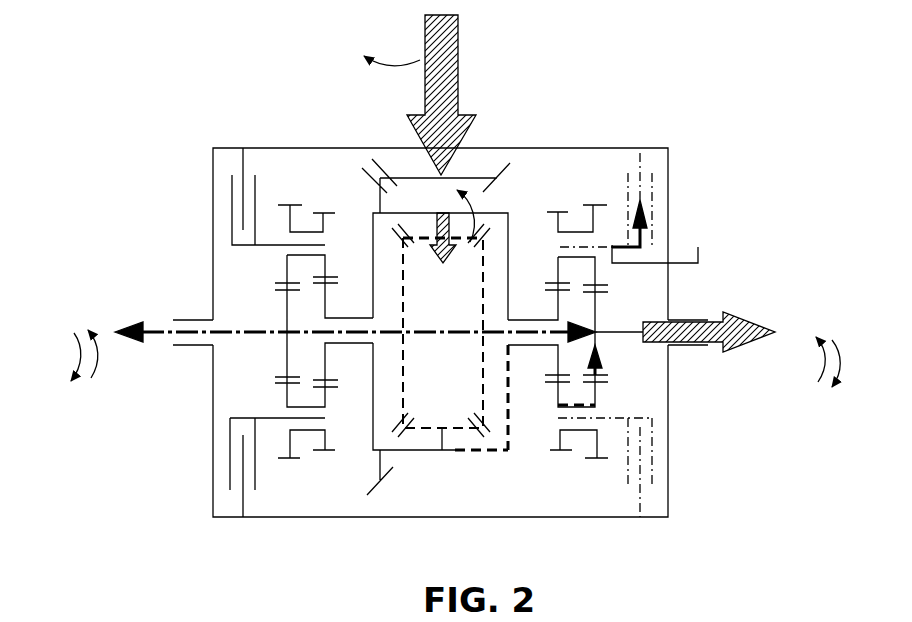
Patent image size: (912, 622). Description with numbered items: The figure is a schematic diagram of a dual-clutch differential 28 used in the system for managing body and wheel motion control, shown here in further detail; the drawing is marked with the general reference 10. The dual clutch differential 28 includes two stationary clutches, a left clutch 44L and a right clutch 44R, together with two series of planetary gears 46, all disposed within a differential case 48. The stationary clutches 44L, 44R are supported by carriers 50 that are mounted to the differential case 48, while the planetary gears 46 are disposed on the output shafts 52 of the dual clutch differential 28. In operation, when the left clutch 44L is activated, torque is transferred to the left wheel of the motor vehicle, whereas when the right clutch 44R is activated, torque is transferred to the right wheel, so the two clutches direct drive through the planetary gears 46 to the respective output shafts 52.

The vehicle 10 is at (854, 619).
The differential 28 is at (781, 41).
The left clutch 44L is at (230, 196).
The right clutch 44R is at (640, 167).
The planetary gears 46 is at (317, 196).
The differential case 48 is at (230, 148).
The carriers 50 is at (705, 253).
The output shafts 52 is at (168, 329).